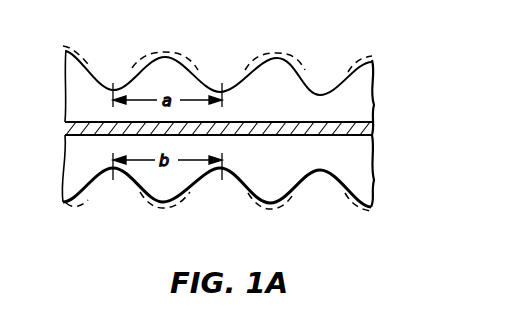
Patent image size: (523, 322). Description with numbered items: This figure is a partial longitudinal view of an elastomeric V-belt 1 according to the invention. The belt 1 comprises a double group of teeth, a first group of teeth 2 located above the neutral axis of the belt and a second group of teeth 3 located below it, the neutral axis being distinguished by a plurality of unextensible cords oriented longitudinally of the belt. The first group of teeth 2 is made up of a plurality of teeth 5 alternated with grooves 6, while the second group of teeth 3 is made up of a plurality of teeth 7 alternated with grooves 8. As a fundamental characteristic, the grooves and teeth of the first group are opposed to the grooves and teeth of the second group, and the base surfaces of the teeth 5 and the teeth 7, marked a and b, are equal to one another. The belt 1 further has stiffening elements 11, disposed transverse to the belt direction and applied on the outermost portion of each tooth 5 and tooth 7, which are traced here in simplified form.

The elastomeric V-belt 1 is at (384, 86).
The first group of teeth 2 is at (72, 64).
The second group of teeth 3 is at (66, 198).
The teeth 5 is at (177, 78).
The grooves 6 is at (105, 87).
The teeth 7 is at (270, 190).
The grooves 8 is at (318, 172).
The stiffening elements 11 is at (284, 58).